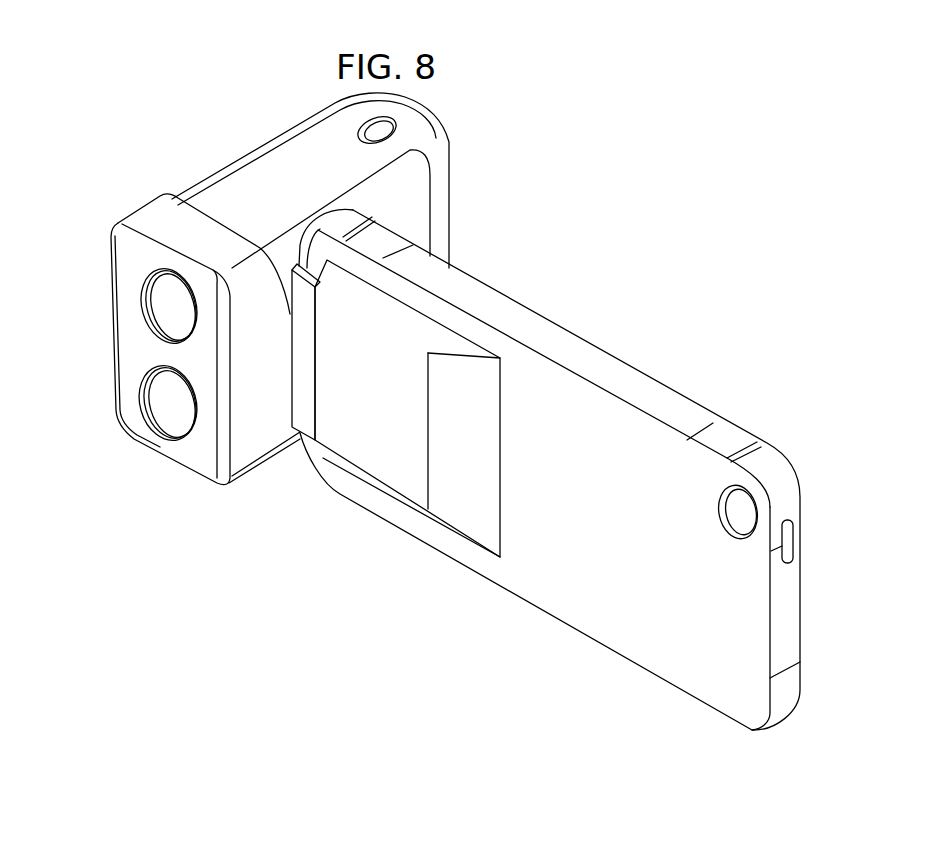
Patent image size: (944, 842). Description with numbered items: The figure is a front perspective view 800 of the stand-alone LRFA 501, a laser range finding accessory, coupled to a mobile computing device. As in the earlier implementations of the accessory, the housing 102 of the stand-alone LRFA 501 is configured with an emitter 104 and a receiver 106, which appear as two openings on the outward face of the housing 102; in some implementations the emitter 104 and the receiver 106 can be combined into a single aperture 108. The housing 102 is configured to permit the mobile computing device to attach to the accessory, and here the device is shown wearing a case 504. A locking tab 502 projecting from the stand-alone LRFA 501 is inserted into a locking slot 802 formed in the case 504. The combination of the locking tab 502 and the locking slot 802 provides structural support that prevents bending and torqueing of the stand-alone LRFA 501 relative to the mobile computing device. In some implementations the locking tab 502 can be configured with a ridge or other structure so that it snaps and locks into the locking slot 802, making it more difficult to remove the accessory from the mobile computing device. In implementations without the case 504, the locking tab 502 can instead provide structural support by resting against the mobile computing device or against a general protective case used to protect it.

The housing 102 is at (442, 207).
The stand-alone LRFA 501 is at (267, 183).
The emitter 104 is at (162, 300).
The receiver 106 is at (162, 395).
The case 504 is at (636, 378).
The front perspective view 800 is at (647, 209).
The aperture 108 is at (730, 505).
The locking tab 502 is at (302, 371).
The locking slot 802 is at (377, 458).